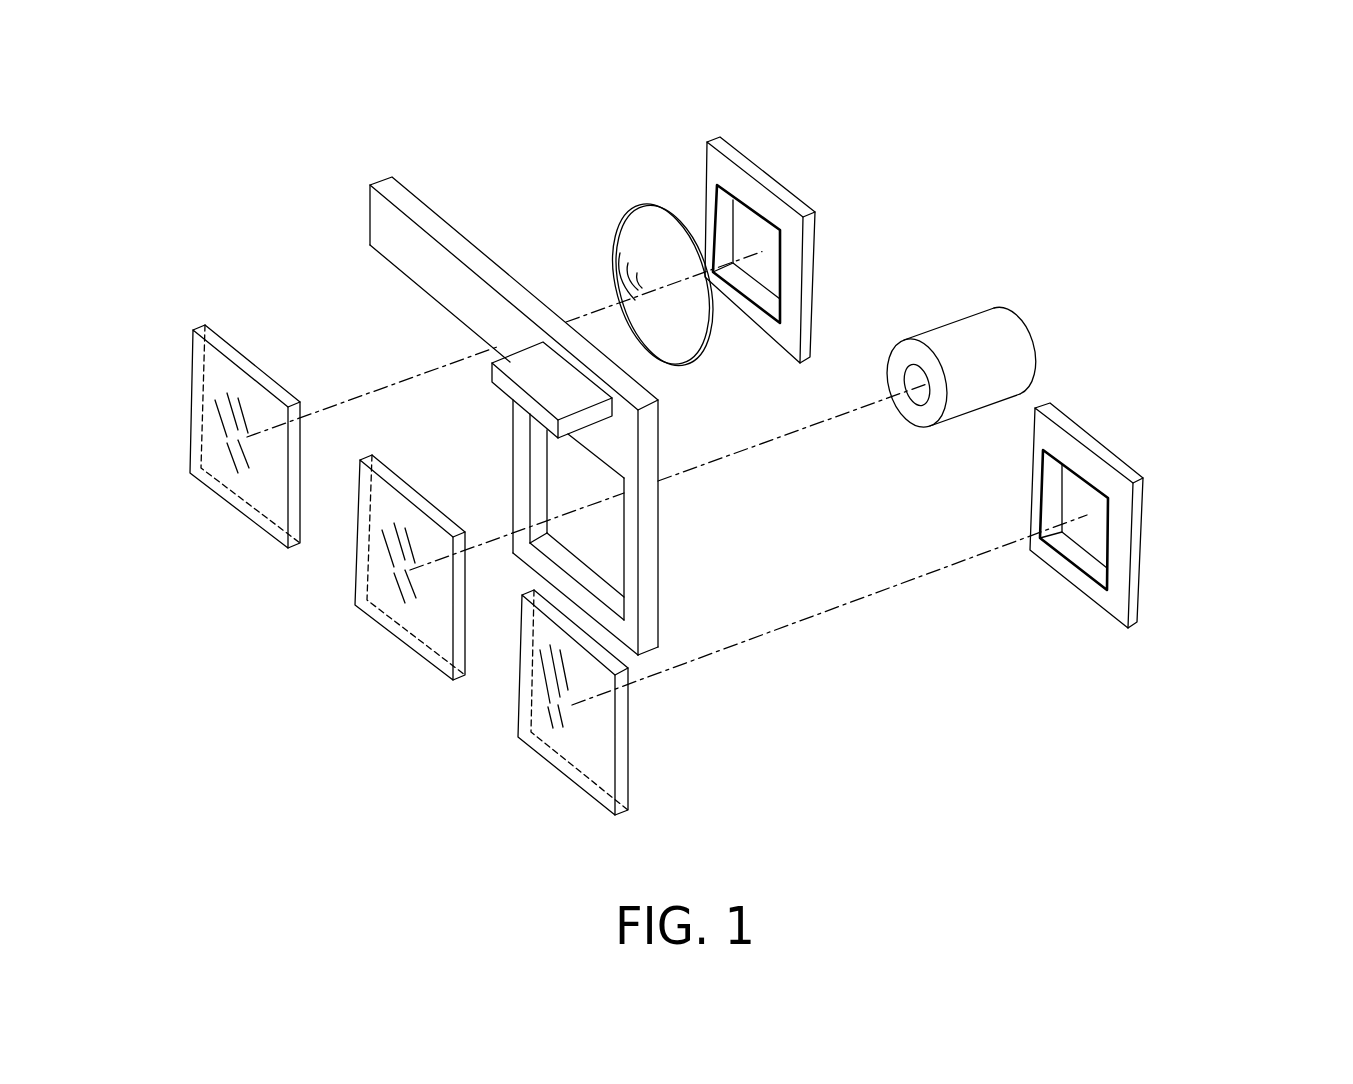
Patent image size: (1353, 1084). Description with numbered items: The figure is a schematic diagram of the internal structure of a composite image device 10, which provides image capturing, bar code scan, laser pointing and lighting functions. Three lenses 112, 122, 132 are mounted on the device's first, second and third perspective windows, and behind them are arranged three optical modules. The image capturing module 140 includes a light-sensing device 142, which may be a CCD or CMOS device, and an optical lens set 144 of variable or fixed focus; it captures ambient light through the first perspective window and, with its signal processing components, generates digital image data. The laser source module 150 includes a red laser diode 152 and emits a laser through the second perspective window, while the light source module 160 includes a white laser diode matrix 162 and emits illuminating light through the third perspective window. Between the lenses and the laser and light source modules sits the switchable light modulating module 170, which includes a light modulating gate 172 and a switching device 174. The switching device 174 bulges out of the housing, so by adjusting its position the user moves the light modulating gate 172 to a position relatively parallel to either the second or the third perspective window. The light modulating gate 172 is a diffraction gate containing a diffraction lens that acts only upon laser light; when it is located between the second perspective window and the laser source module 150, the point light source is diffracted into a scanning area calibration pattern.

The composite image device 10 is at (1195, 166).
The lens 112 is at (197, 368).
The lens 122 is at (389, 624).
The lens 132 is at (622, 748).
The image capturing module 140 is at (720, 134).
The light-sensing device 142 is at (773, 275).
The optical lens set 144 is at (690, 347).
The laser source module 150 is at (1013, 333).
The red laser diode 152 is at (910, 393).
The light source module 160 is at (1138, 496).
The white laser diode matrix 162 is at (1083, 543).
The switchable light modulating module 170 is at (388, 186).
The light modulating gate 172 is at (637, 563).
The switching device 174 is at (505, 385).